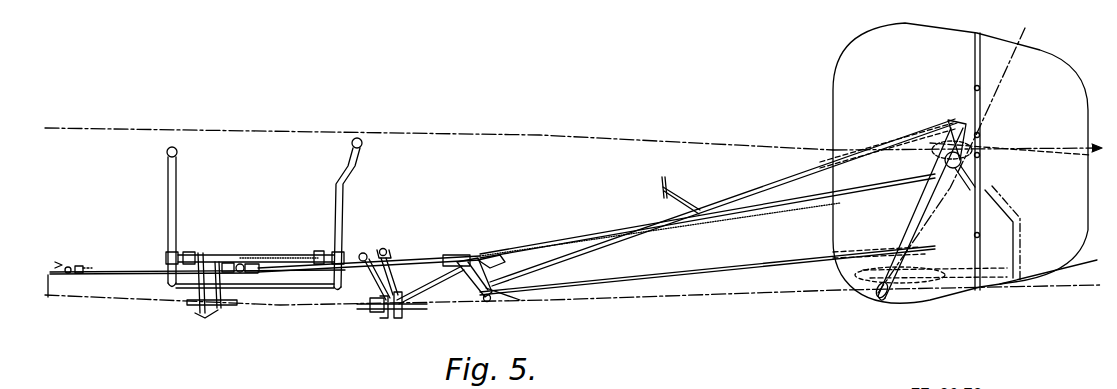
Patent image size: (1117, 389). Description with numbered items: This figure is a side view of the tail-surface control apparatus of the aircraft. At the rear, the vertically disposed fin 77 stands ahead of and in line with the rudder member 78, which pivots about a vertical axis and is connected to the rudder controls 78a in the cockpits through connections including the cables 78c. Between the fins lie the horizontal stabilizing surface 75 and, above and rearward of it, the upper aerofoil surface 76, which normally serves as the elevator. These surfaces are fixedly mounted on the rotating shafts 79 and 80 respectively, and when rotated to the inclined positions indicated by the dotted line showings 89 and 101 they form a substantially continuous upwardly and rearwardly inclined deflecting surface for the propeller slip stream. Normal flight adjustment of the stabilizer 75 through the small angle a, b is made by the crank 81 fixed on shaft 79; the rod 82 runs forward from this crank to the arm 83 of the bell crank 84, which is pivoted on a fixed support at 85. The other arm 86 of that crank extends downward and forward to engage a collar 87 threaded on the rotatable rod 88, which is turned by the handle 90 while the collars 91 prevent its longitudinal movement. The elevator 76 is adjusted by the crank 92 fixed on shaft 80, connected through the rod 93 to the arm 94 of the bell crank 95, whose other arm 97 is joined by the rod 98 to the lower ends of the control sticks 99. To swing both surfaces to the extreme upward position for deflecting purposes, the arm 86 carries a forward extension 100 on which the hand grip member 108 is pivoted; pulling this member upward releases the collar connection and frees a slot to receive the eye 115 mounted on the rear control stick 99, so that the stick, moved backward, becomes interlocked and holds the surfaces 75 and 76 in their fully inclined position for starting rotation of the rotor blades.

The stabilizing surface 75 is at (951, 264).
The upper aerofoil surface 76 is at (1053, 147).
The fin 77 is at (930, 161).
The rudder member 78 is at (960, 163).
The rudder control 78a is at (83, 265).
The cable 78c is at (775, 212).
The rotating shaft 79 is at (884, 292).
The rotating shaft 80 is at (978, 170).
The crank 81 is at (910, 261).
The rod 82 is at (733, 271).
The arm 83 is at (492, 302).
The bell crank 84 is at (490, 265).
The fixed support 85 is at (470, 260).
The arm 86 is at (448, 262).
The collar 87 is at (404, 313).
The rotatable rod 88 is at (390, 275).
The dotted line showing 89 is at (912, 220).
The handle 90 is at (370, 248).
The collar 91 is at (386, 258).
The crank 92 is at (950, 137).
The rod 93 is at (767, 184).
The arm 94 is at (500, 248).
The bell crank 95 is at (510, 293).
The arm 97 is at (457, 255).
The rod 98 is at (350, 290).
The control stick 99 is at (177, 197).
The forward extension 100 is at (372, 312).
The dotted line showing 101 is at (997, 97).
The hand grip member 108 is at (383, 315).
The eye 115 is at (342, 226).
The angle a is at (1048, 266).
The angle b is at (1078, 297).